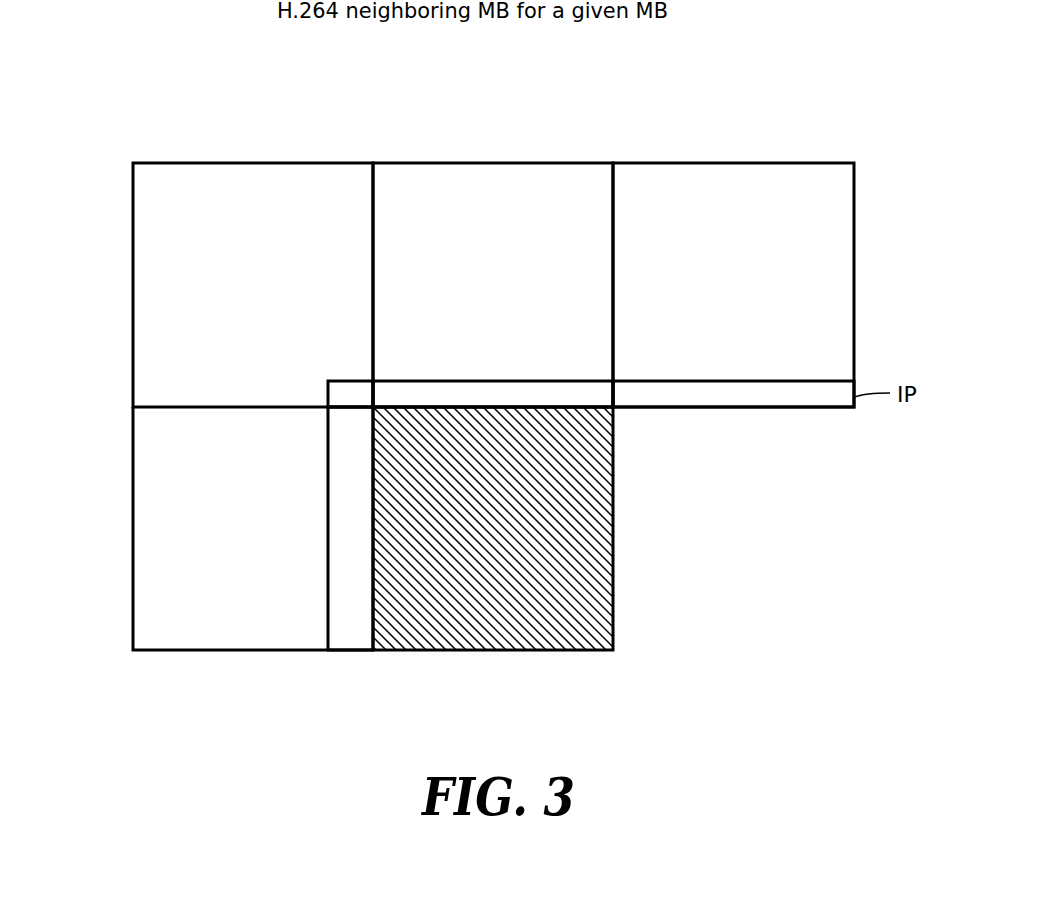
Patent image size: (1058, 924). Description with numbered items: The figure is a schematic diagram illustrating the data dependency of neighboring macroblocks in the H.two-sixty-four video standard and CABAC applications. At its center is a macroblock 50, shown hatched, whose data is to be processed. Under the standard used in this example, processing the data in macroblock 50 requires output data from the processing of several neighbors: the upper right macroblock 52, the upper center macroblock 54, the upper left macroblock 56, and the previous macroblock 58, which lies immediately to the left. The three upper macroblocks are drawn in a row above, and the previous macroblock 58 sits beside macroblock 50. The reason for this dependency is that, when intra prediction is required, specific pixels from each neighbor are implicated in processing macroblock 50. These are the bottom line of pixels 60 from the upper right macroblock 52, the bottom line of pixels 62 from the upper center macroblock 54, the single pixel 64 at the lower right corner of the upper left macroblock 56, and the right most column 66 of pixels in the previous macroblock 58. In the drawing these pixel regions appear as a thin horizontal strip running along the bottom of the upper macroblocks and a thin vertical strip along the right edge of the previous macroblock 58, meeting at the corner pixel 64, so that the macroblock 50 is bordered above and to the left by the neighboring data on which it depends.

The macroblock 50 is at (582, 597).
The upper right macroblock 52 is at (648, 179).
The upper center macroblock 54 is at (409, 179).
The upper left macroblock 56 is at (172, 179).
The previous macroblock 58 is at (143, 601).
The bottom line of pixels 60 is at (797, 380).
The bottom line of pixels 62 is at (512, 380).
The single pixel 64 is at (328, 380).
The right most column of pixels 66 is at (328, 620).